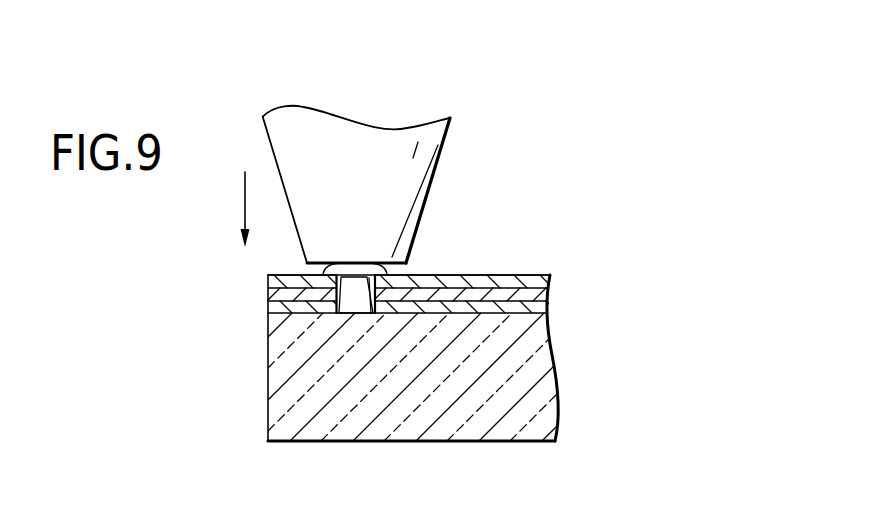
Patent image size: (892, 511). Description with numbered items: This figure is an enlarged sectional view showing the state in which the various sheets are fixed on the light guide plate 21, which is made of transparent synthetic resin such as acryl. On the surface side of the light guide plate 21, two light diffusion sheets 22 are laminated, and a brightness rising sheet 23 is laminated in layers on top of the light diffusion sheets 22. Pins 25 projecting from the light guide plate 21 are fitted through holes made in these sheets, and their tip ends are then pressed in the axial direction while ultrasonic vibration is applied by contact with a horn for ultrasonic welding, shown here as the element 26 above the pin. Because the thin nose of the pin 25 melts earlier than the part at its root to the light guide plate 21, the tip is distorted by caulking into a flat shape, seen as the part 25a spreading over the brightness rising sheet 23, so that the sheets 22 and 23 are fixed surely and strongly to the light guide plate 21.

The light guide plate 21 is at (568, 369).
The light diffusion sheet 22 is at (557, 307).
The brightness rising sheet 23 is at (501, 275).
The pin 25 is at (358, 289).
The part distorted by caulking 25a is at (357, 266).
The pressing tool 26 is at (425, 155).